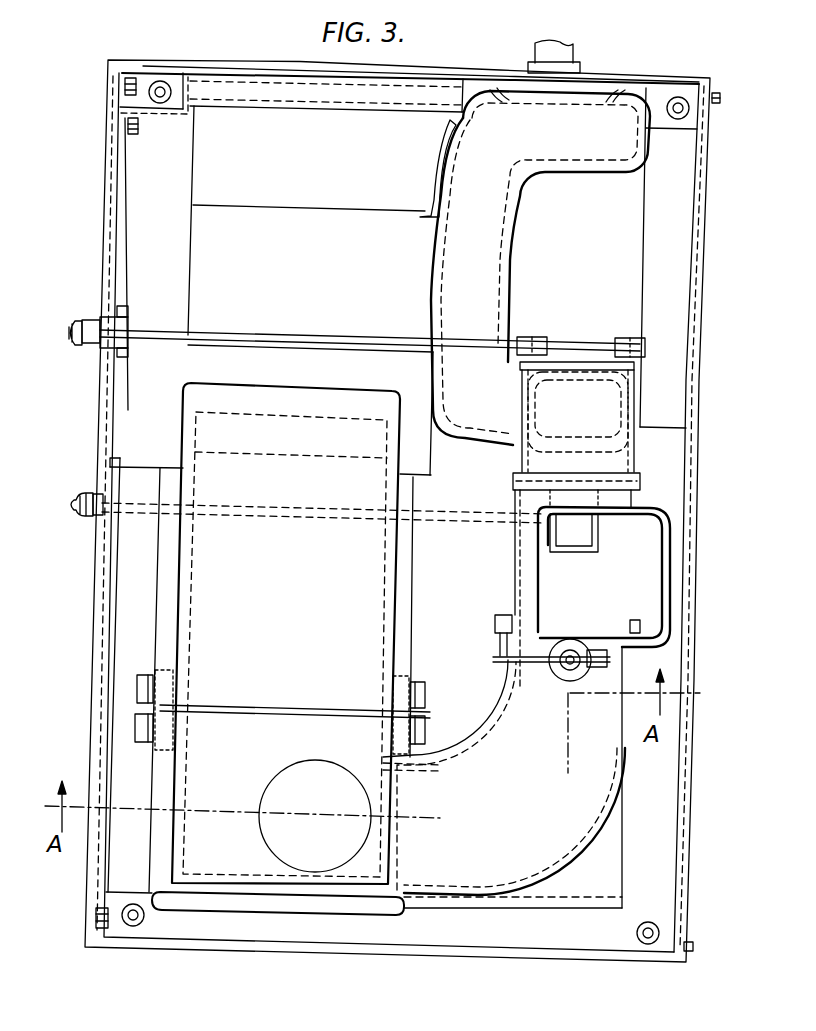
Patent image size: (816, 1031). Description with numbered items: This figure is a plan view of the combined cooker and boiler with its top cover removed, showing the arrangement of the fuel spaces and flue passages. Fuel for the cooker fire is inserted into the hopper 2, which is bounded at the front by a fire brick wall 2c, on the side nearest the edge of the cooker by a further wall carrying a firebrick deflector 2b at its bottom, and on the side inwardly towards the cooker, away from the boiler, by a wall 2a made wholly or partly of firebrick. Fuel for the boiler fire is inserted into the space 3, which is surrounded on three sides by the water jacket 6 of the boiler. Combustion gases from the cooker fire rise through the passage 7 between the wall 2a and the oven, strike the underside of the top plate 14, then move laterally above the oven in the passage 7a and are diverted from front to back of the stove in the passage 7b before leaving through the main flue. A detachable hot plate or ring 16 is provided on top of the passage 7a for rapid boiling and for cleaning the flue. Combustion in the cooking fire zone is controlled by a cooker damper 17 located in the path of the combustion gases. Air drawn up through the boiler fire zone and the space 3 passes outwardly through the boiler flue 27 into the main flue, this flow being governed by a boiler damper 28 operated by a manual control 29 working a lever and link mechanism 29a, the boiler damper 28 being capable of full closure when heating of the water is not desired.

The hopper 2 is at (325, 220).
The wall 2a is at (331, 370).
The firebrick deflector 2b is at (309, 179).
The fire brick wall 2c is at (168, 265).
The space 3 is at (623, 258).
The water jacket 6 is at (540, 268).
The passage 7 is at (286, 633).
The passage 7a is at (285, 644).
The passage 7b is at (504, 777).
The top plate 14 is at (350, 598).
The hot plate 16 is at (315, 816).
The cooker damper 17 is at (548, 625).
The boiler flue 27 is at (540, 462).
The boiler damper 28 is at (583, 362).
The manual control 29 is at (73, 345).
The lever and link mechanism 29a is at (120, 312).